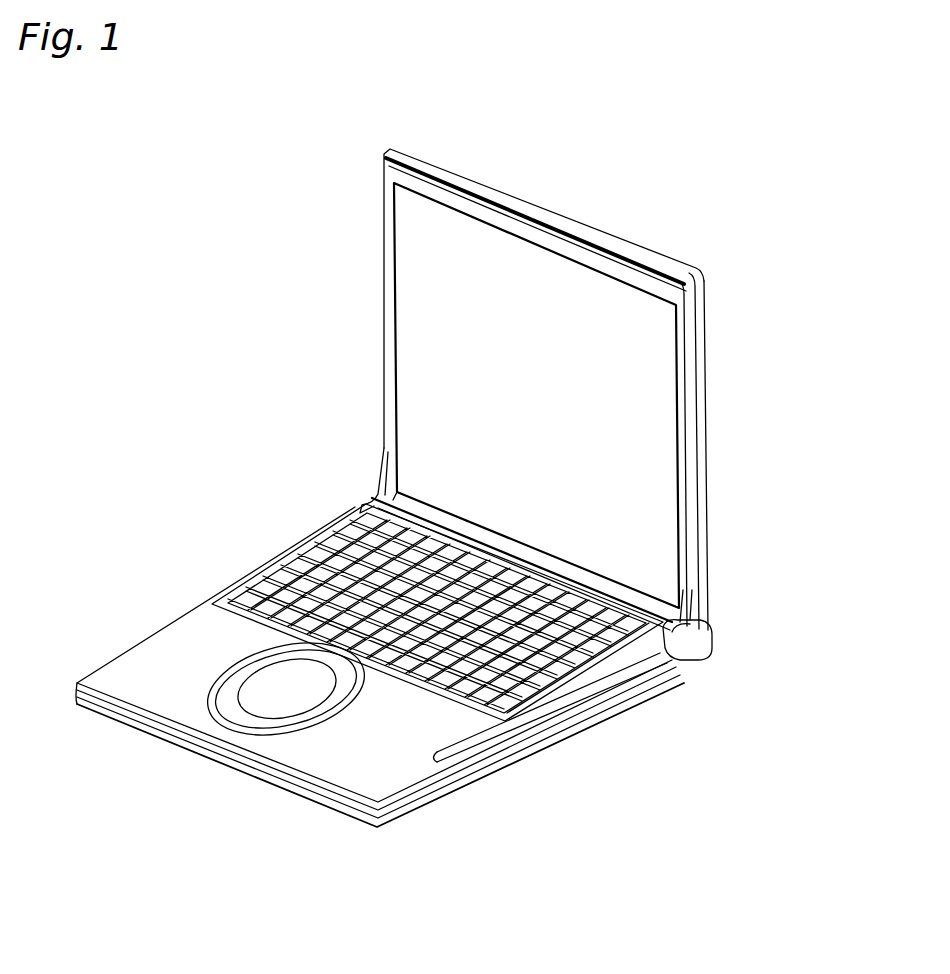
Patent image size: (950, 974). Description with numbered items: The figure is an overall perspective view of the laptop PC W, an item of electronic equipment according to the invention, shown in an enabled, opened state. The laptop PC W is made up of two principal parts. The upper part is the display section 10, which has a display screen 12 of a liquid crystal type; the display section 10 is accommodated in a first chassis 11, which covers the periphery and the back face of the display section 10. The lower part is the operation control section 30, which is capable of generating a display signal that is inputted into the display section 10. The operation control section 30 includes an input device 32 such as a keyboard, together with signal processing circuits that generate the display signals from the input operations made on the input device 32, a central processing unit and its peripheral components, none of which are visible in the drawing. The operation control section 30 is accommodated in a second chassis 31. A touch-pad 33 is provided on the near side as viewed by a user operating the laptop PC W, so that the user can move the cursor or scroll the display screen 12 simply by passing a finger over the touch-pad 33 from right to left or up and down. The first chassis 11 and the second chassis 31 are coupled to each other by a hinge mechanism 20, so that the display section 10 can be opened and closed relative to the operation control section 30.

The display section 10 is at (540, 389).
The chassis 11 is at (690, 394).
The display screen 12 is at (418, 330).
The laptop PC W is at (713, 320).
The hinge mechanism 20 is at (703, 650).
The operation control section 30 is at (380, 663).
The chassis 31 is at (478, 757).
The input device 32 is at (318, 565).
The touch-pad 33 is at (255, 690).